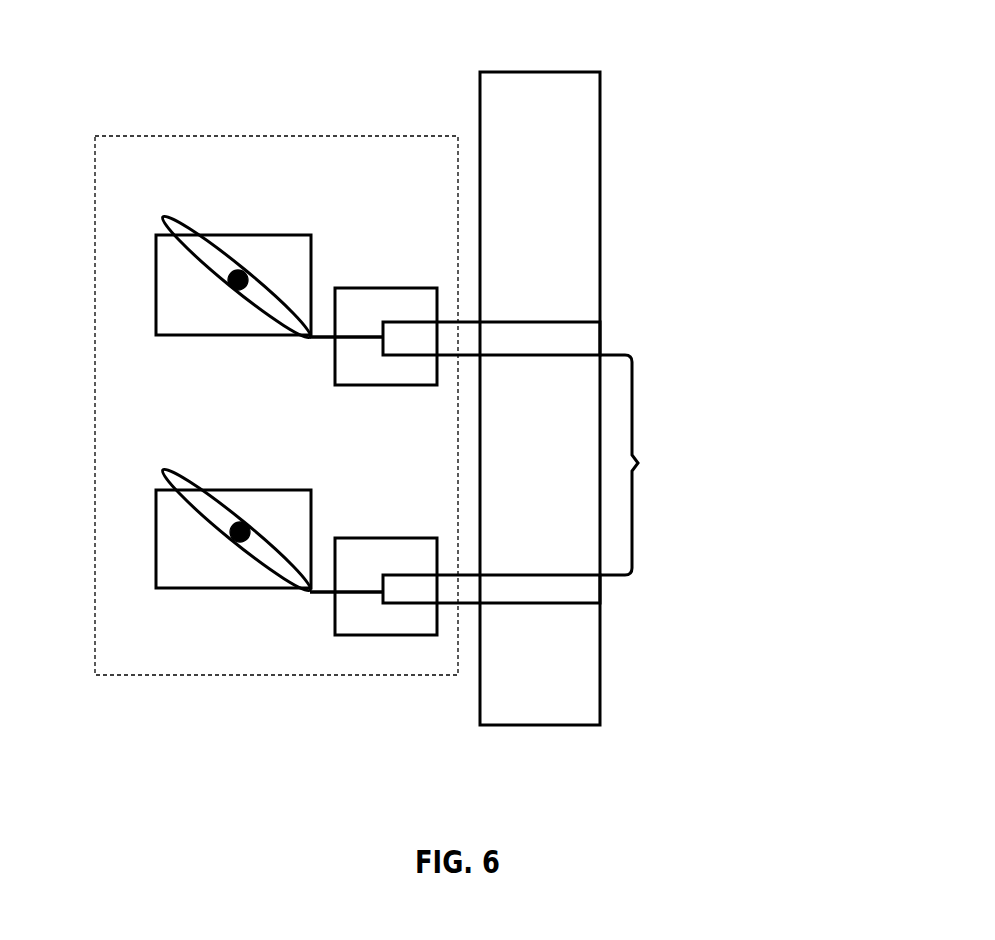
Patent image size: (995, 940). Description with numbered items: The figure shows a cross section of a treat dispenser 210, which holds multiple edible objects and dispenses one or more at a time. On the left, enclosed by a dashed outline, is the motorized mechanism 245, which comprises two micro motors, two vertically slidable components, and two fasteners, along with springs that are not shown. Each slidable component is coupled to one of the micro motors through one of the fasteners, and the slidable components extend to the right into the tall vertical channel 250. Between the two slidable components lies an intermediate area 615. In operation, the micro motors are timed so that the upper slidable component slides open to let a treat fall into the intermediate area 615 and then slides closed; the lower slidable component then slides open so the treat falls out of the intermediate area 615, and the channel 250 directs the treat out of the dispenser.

The treat dispenser 210 is at (745, 175).
The motorized mechanism 245 is at (158, 134).
The channel 250 is at (600, 165).
The intermediate area 615 is at (638, 463).